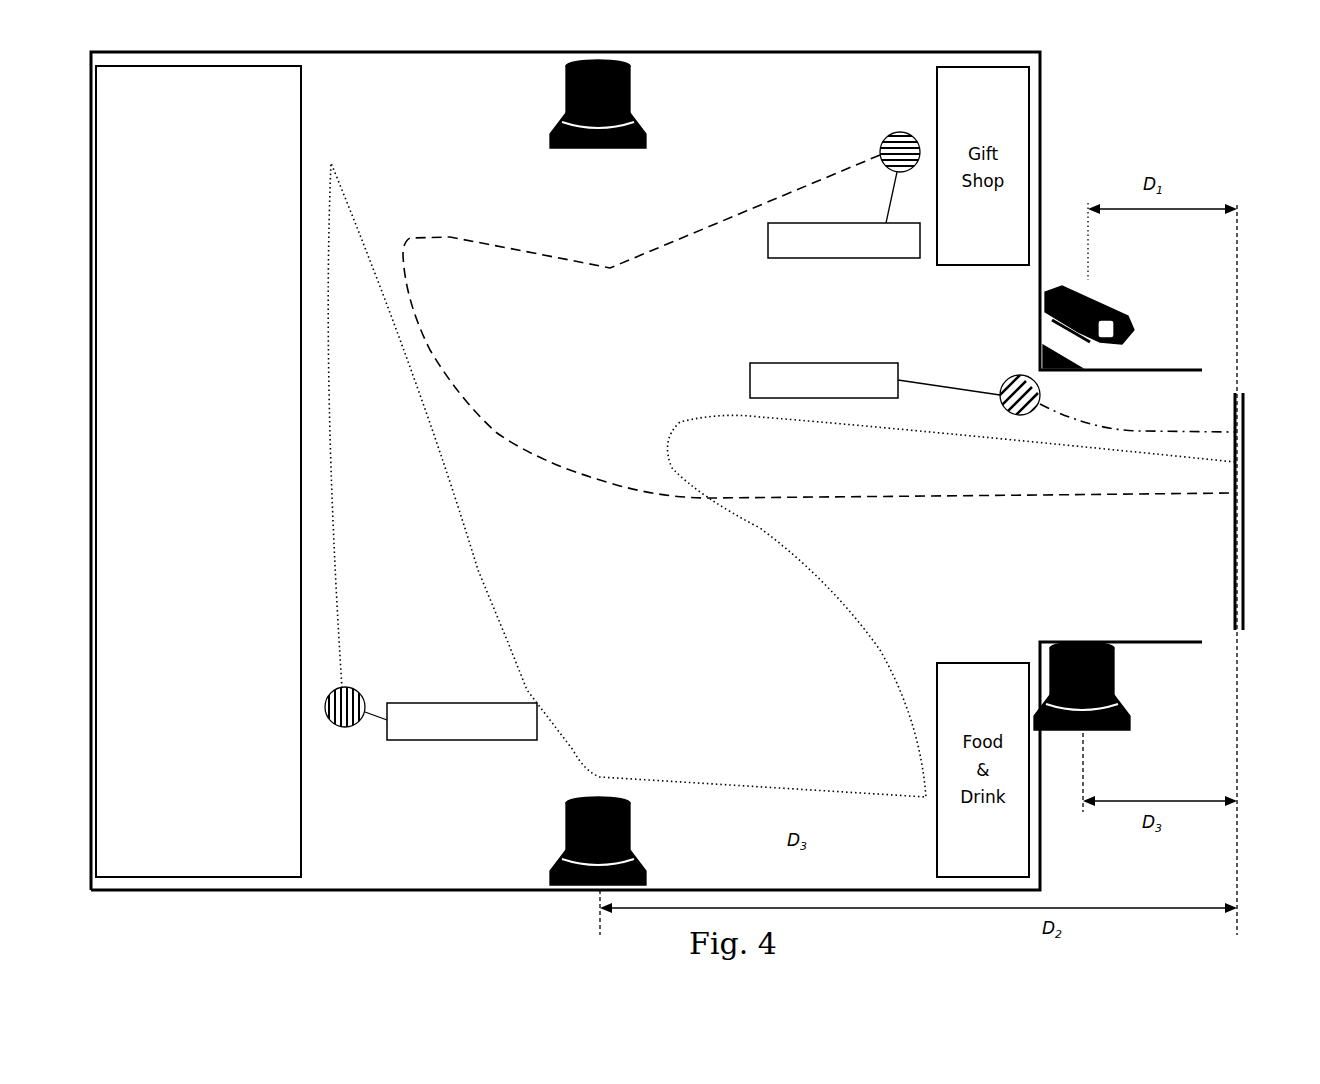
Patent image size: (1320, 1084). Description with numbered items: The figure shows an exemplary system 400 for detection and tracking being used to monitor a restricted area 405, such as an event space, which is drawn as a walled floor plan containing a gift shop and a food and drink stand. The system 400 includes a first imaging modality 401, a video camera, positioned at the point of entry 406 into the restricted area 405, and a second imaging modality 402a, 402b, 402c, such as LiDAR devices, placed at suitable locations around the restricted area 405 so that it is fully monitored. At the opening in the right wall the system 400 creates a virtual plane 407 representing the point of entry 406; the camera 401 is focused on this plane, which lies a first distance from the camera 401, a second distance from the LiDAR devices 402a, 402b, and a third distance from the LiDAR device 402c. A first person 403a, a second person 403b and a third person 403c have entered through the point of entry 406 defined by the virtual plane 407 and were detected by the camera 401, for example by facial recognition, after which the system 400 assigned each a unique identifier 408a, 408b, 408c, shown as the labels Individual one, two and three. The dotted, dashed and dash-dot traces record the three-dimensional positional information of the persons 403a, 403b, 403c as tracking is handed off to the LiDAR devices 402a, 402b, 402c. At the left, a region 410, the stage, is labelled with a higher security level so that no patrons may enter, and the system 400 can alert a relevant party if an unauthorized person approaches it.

The system for detection and tracking 400 is at (1252, 118).
The first imaging modality 401 is at (1104, 305).
The second imaging modality 402a is at (560, 125).
The second imaging modality 402b is at (562, 858).
The second imaging modality 402c is at (1112, 673).
The first person 403a is at (345, 727).
The second person 403b is at (886, 138).
The third person 403c is at (1002, 385).
The restricted area 405 is at (1050, 94).
The point of entry 406 is at (1189, 570).
The virtual plane 407 is at (1243, 598).
The unique identifier 408a is at (470, 740).
The unique identifier 408b is at (845, 258).
The unique identifier 408c is at (806, 360).
The region 410 is at (198, 471).